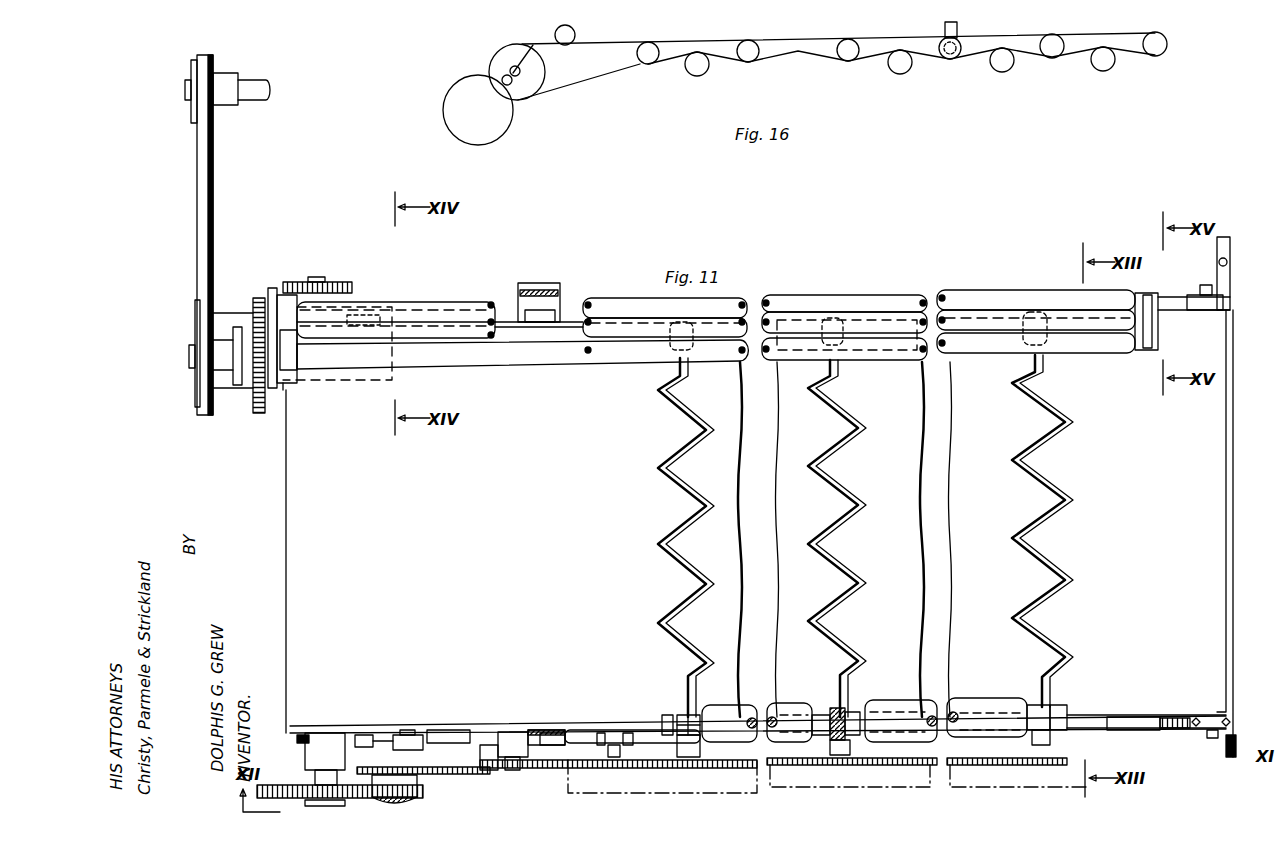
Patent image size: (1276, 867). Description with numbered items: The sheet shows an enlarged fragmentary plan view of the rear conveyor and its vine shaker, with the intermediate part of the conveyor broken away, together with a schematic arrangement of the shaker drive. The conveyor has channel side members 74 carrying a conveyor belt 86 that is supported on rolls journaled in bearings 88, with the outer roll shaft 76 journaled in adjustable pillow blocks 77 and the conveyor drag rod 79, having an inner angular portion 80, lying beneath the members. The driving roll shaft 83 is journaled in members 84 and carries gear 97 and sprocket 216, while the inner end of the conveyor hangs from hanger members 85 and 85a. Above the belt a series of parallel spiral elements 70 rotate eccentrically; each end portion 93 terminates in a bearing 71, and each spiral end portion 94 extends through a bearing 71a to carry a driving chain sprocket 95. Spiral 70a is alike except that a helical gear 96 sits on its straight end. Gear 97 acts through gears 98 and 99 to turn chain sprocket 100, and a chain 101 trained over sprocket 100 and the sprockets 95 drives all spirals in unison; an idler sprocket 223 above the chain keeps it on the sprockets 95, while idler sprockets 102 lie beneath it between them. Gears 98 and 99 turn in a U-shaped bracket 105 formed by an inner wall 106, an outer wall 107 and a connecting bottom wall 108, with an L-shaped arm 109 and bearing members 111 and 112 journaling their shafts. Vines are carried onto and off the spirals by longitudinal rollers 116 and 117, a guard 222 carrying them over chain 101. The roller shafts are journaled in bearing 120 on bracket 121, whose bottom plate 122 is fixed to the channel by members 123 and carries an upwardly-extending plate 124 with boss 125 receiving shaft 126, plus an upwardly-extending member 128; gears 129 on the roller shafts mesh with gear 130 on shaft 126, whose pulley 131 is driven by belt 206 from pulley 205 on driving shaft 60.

In FIG. 11, the driving shaft 60 is at (266, 80).
In FIG. 11, the spiral element 70 is at (662, 468).
In FIG. 11, the spiral 70a is at (812, 468).
In FIG. 11, the bearing 71 is at (1045, 342).
In FIG. 11, the bearing 71a is at (695, 715).
In FIG. 11, the side member 74 is at (395, 301).
In FIG. 11, the shaft 76 is at (1207, 738).
In FIG. 11, the adjustable pillow block 77 is at (1140, 717).
In FIG. 11, the conveyor drag rod 79 is at (1233, 575).
In FIG. 11, the inner angular portion 80 is at (1228, 256).
In FIG. 11, the shaft 83 is at (320, 278).
In FIG. 11, the member 84 is at (297, 738).
In FIG. 11, the hanger member 85 is at (548, 730).
In FIG. 11, the hanger member 85a is at (540, 290).
In FIG. 11, the conveyor belt 86 is at (756, 561).
In FIG. 11, the bearing 88 is at (622, 745).
In FIG. 11, the end portion 93 is at (672, 352).
In FIG. 11, the spiral end portion 94 is at (683, 690).
In FIG. 16, the driving chain sprocket 95 is at (752, 62).
In FIG. 11, the helical gear 96 is at (850, 712).
In FIG. 16, the gear 97 is at (512, 112).
In FIG. 11, the gear 97 is at (272, 785).
In FIG. 16, the gear 98 is at (505, 86).
In FIG. 11, the gear 98 is at (377, 745).
In FIG. 16, the gear 99 is at (530, 46).
In FIG. 16, the chain sprocket 100 is at (540, 76).
In FIG. 11, the chain sprocket 100 is at (455, 767).
In FIG. 16, the chain 101 is at (636, 28).
In FIG. 11, the chain 101 is at (590, 770).
In FIG. 16, the idler sprocket 102 is at (692, 76).
In FIG. 11, the U-shaped bracket 105 is at (470, 756).
In FIG. 11, the inner wall 106 is at (490, 730).
In FIG. 11, the outer wall 107 is at (495, 798).
In FIG. 11, the connecting bottom wall 108 is at (490, 778).
In FIG. 11, the arm 109 is at (430, 778).
In FIG. 11, the bearing member 111 is at (410, 735).
In FIG. 11, the bearing member 112 is at (420, 797).
In FIG. 11, the roller 116 is at (872, 312).
In FIG. 11, the roller 117 is at (985, 698).
In FIG. 11, the bearing 120 is at (288, 383).
In FIG. 11, the bracket 121 is at (236, 305).
In FIG. 11, the bottom plate 122 is at (365, 380).
In FIG. 11, the member 123 is at (350, 315).
In FIG. 11, the upwardly-extending plate 124 is at (240, 386).
In FIG. 11, the boss 125 is at (225, 366).
In FIG. 11, the shaft 126 is at (189, 362).
In FIG. 11, the upwardly-extending member 128 is at (273, 390).
In FIG. 11, the gear 129 is at (262, 297).
In FIG. 11, the gear 130 is at (259, 414).
In FIG. 11, the pulley 131 is at (195, 318).
In FIG. 11, the pulley 205 is at (191, 110).
In FIG. 11, the belt 206 is at (197, 198).
In FIG. 11, the sprocket 216 is at (330, 280).
In FIG. 11, the guard 222 is at (780, 776).
In FIG. 16, the idler sprocket 223 is at (576, 30).
In FIG. 11, the idler sprocket 223 is at (537, 768).